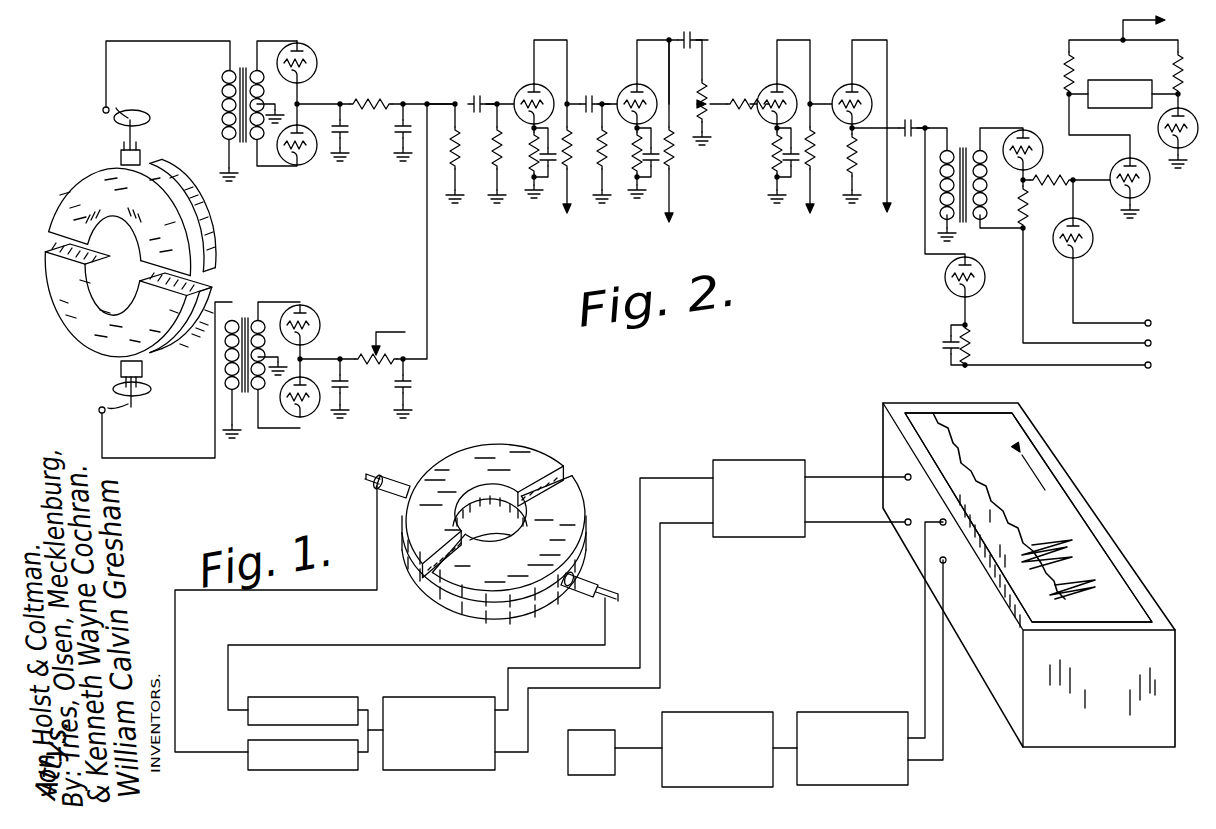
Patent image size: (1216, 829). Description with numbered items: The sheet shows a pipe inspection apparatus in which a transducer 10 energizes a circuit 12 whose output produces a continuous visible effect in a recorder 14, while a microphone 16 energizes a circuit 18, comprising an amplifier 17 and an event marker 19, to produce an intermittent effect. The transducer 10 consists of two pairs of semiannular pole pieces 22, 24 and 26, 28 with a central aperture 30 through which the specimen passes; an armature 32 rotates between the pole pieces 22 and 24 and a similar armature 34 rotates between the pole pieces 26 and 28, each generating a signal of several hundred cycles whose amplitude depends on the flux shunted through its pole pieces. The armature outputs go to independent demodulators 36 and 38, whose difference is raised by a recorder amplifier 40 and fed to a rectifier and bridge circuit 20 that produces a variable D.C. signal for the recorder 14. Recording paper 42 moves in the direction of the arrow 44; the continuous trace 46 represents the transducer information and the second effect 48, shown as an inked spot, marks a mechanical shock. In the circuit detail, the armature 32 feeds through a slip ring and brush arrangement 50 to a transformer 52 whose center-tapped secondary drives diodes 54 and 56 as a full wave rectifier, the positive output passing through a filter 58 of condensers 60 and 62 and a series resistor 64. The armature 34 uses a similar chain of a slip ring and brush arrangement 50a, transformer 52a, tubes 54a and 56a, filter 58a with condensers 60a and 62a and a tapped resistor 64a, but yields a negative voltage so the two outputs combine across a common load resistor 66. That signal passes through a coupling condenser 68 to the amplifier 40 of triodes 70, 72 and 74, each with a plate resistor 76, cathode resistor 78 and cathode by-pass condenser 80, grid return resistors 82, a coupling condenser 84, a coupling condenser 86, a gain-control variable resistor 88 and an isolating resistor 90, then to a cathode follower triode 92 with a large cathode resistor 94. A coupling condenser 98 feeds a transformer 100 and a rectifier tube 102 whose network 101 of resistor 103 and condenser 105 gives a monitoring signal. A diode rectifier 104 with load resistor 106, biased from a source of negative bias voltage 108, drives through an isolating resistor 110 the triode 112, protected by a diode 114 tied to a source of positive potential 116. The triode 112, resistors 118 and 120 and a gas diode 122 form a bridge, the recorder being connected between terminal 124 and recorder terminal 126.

In FIG. 1, the transducer 10 is at (398, 577).
In FIG. 1, the circuit 12 is at (595, 611).
In FIG. 2, the recorder 14 is at (1094, 109).
In FIG. 1, the recorder 14 is at (1001, 565).
In FIG. 1, the microphone 16 is at (615, 738).
In FIG. 1, the amplifier 17 is at (679, 727).
In FIG. 1, the circuit 18 is at (758, 679).
In FIG. 1, the event marker 19 is at (809, 722).
In FIG. 2, the rectifier and bridge circuit 20 is at (1040, 190).
In FIG. 1, the rectifier and bridge circuit 20 is at (754, 461).
In FIG. 2, the semiannular pole piece 22 is at (85, 195).
In FIG. 1, the semiannular pole piece 22 is at (432, 461).
In FIG. 2, the semiannular pole piece 24 is at (205, 249).
In FIG. 1, the semiannular pole piece 24 is at (410, 593).
In FIG. 2, the semiannular pole piece 26 is at (82, 320).
In FIG. 1, the semiannular pole piece 26 is at (558, 479).
In FIG. 2, the semiannular pole piece 28 is at (204, 297).
In FIG. 1, the semiannular pole piece 28 is at (531, 613).
In FIG. 1, the central aperture 30 is at (493, 549).
In FIG. 2, the armature 32 is at (146, 153).
In FIG. 1, the armature 32 is at (384, 476).
In FIG. 2, the armature 34 is at (145, 363).
In FIG. 1, the armature 34 is at (604, 577).
In FIG. 2, the demodulator 36 is at (339, 287).
In FIG. 1, the demodulator 36 is at (295, 763).
In FIG. 2, the demodulator 38 is at (337, 128).
In FIG. 1, the demodulator 38 is at (282, 697).
In FIG. 2, the recorder amplifier 40 is at (687, 126).
In FIG. 1, the recorder amplifier 40 is at (429, 697).
In FIG. 1, the recording paper 42 is at (1090, 586).
In FIG. 1, the arrow 44 is at (1041, 481).
In FIG. 1, the continuous trace 46 is at (1035, 545).
In FIG. 1, the second effect 48 is at (925, 431).
In FIG. 2, the slip ring and brush arrangement 50 is at (118, 118).
In FIG. 2, the slip ring and brush arrangement 50a is at (123, 411).
In FIG. 2, the transformer 52 is at (242, 146).
In FIG. 2, the transformer 52a is at (247, 408).
In FIG. 2, the diode 54 is at (316, 68).
In FIG. 2, the tube 54a is at (313, 320).
In FIG. 2, the diode 56 is at (312, 157).
In FIG. 2, the tube 56a is at (310, 417).
In FIG. 2, the filter 58 is at (371, 145).
In FIG. 2, the filter 58a is at (393, 388).
In FIG. 2, the condenser 60 is at (350, 138).
In FIG. 2, the condenser 60a is at (347, 384).
In FIG. 2, the condenser 62 is at (397, 147).
In FIG. 2, the condenser 62a is at (408, 379).
In FIG. 2, the series resistor 64 is at (366, 98).
In FIG. 2, the resistor 64a is at (370, 334).
In FIG. 2, the common load resistor 66 is at (493, 161).
In FIG. 2, the coupling condenser 68 is at (475, 96).
In FIG. 2, the triode 70 is at (522, 87).
In FIG. 2, the triode 72 is at (618, 84).
In FIG. 2, the triode 74 is at (762, 87).
In FIG. 2, the plate resistor 76 is at (567, 159).
In FIG. 2, the cathode resistor 78 is at (532, 171).
In FIG. 2, the cathode by-pass condenser 80 is at (550, 176).
In FIG. 2, the grid return resistor 82 is at (457, 149).
In FIG. 2, the coupling condenser 84 is at (588, 93).
In FIG. 2, the coupling condenser 86 is at (688, 51).
In FIG. 2, the variable resistor 88 is at (712, 115).
In FIG. 2, the isolating resistor 90 is at (740, 113).
In FIG. 2, the triode 92 is at (833, 87).
In FIG. 2, the cathode resistor 94 is at (853, 155).
In FIG. 2, the coupling condenser 98 is at (909, 121).
In FIG. 2, the transformer 100 is at (960, 149).
In FIG. 2, the network 101 is at (945, 353).
In FIG. 2, the rectifier tube 102 is at (948, 289).
In FIG. 2, the resistor 103 is at (968, 337).
In FIG. 2, the diode rectifier 104 is at (1042, 135).
In FIG. 2, the condenser 105 is at (942, 337).
In FIG. 2, the load resistor 106 is at (1028, 206).
In FIG. 2, the source of negative bias voltage 108 is at (1151, 344).
In FIG. 2, the isolating resistor 110 is at (1052, 178).
In FIG. 2, the triode 112 is at (1148, 184).
In FIG. 2, the diode 114 is at (1091, 239).
In FIG. 2, the source of positive potential 116 is at (1145, 319).
In FIG. 2, the resistor 118 is at (1063, 73).
In FIG. 2, the resistor 120 is at (1174, 75).
In FIG. 2, the gas diode 122 is at (1176, 143).
In FIG. 2, the terminal 124 is at (1070, 95).
In FIG. 2, the recorder terminal 126 is at (1168, 97).